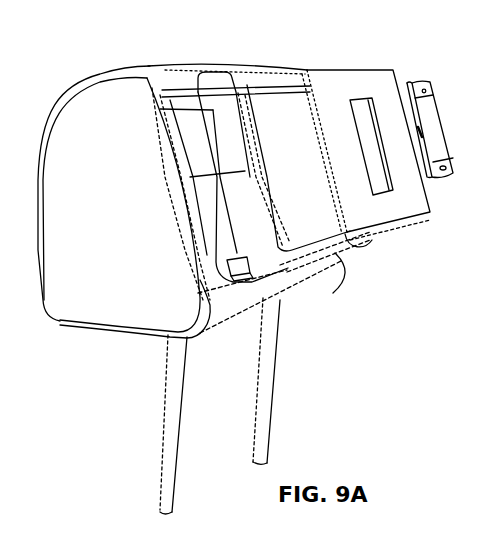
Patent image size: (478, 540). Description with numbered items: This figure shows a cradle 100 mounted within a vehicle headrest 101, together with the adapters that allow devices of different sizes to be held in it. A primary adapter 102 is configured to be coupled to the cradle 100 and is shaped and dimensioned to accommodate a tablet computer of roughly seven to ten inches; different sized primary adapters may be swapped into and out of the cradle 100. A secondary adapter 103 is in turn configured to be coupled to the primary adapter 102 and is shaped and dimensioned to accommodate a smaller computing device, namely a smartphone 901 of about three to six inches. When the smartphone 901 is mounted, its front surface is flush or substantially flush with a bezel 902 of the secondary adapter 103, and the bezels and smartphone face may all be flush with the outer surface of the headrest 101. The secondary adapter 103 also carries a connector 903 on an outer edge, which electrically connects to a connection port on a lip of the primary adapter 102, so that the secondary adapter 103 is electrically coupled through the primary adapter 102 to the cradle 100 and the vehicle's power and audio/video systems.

The cradle 100 is at (267, 268).
The headrest 101 is at (90, 313).
The primary adapter 102 is at (348, 243).
The secondary adapter 103 is at (413, 212).
The smartphone 901 is at (433, 89).
The bezel 902 is at (340, 83).
The connector 903 is at (327, 170).